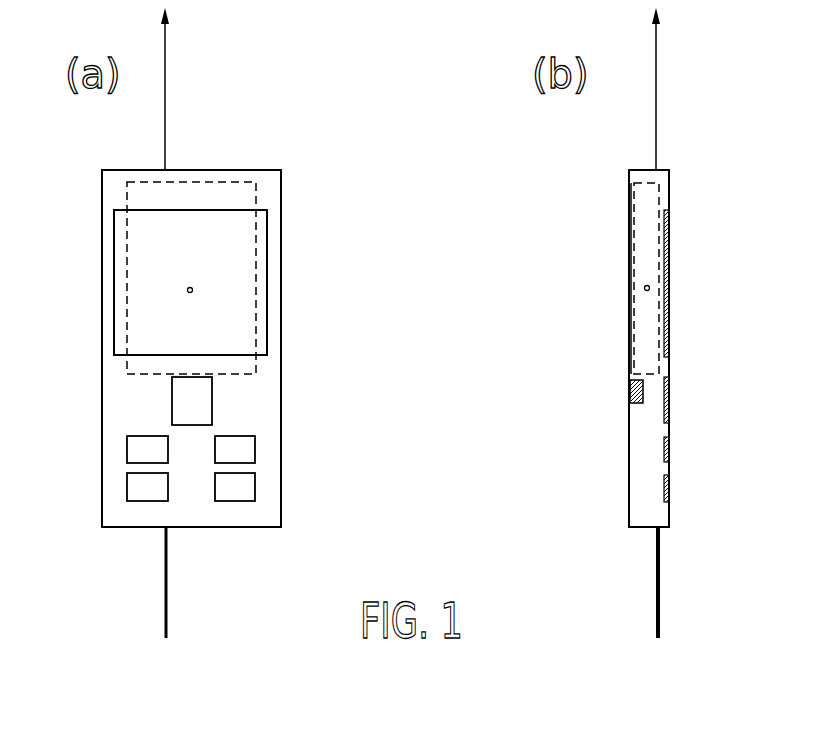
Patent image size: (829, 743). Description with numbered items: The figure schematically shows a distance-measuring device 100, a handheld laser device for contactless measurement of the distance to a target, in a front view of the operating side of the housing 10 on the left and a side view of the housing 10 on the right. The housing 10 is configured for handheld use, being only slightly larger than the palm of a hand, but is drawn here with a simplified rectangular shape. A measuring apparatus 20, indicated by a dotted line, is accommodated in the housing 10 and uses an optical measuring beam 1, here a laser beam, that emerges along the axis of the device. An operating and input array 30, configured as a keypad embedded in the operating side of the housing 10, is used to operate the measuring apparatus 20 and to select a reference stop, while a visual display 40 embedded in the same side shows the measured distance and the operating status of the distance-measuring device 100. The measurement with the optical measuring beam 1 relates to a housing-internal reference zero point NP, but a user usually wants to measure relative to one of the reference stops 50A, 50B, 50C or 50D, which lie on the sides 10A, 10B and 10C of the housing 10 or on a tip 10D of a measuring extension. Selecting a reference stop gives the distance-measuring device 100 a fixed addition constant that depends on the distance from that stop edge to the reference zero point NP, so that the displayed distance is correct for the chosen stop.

The distance-measuring device 100 is at (264, 86).
The housing 10 is at (102, 401).
The optical measuring beam 1 is at (166, 100).
The side of the housing 10A is at (127, 528).
The side of the housing 10B is at (258, 170).
The side of the housing 10C is at (630, 381).
The tip of a measuring extension 10D is at (165, 639).
The measuring apparatus 20 is at (255, 226).
The operating and input array 30 is at (271, 447).
The visual display 40 is at (268, 267).
The reference stop 50A is at (296, 530).
The reference stop 50B is at (296, 170).
The reference stop 50C is at (296, 393).
The reference stop 50D is at (183, 630).
The reference zero point NP is at (192, 288).